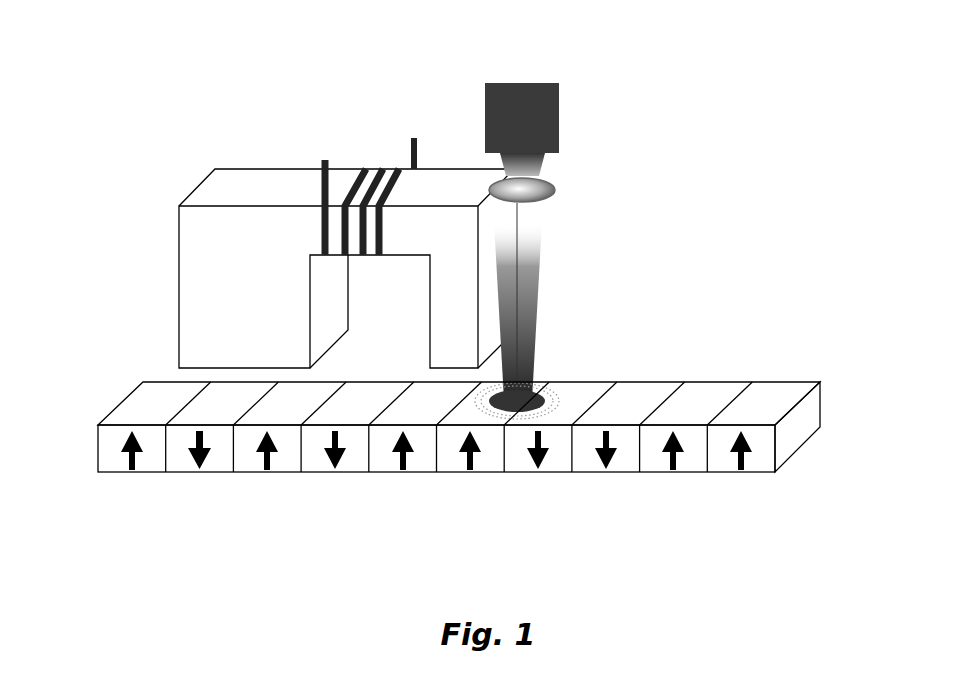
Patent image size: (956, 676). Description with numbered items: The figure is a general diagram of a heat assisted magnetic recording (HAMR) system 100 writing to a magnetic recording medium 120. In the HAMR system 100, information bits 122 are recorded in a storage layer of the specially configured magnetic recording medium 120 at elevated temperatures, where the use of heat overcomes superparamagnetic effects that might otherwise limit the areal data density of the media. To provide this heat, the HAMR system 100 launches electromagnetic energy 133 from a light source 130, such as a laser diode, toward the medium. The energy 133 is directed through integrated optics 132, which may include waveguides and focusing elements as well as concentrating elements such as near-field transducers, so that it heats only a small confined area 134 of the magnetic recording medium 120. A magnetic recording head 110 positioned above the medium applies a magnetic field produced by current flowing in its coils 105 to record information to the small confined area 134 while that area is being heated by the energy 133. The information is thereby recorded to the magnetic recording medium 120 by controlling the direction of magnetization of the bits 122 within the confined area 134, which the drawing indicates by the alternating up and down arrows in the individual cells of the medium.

The HAMR system 100 is at (196, 110).
The coils 105 is at (377, 168).
The magnetic recording head 110 is at (178, 252).
The magnetic recording medium 120 is at (125, 417).
The information bits 122 is at (128, 468).
The light source 130 is at (541, 83).
The integrated optics 132 is at (548, 177).
The electromagnetic energy 133 is at (542, 268).
The small confined area 134 is at (540, 392).